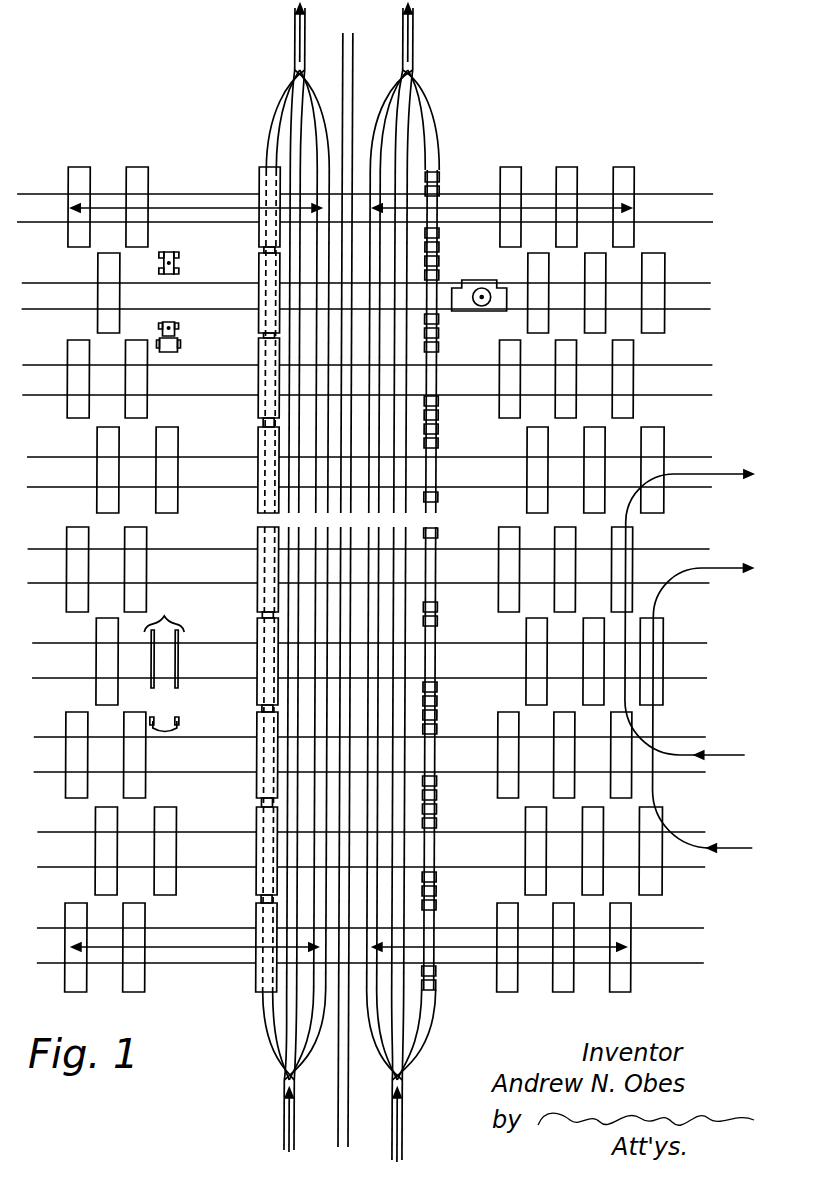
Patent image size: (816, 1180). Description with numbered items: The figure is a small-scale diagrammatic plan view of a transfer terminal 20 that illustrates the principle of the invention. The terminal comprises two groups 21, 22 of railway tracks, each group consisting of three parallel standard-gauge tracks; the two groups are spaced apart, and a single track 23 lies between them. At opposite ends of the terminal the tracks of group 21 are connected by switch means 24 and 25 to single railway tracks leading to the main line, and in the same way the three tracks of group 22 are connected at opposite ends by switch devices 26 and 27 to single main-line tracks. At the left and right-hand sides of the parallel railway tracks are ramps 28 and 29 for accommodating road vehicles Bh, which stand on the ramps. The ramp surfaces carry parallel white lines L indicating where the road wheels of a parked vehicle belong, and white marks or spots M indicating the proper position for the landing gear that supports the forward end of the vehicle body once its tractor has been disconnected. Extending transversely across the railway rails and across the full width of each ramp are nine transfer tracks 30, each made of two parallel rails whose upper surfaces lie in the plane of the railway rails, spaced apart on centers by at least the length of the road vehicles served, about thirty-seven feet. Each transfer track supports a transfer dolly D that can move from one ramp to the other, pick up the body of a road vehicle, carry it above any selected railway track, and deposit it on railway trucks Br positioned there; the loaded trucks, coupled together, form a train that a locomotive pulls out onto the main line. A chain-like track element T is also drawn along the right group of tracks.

The transfer terminal 20 is at (516, 66).
The group of tracks 21 is at (266, 108).
The group of tracks 22 is at (450, 130).
The single track 23 is at (366, 95).
The switch means 24 is at (288, 55).
The switch means 25 is at (280, 1092).
The switch device 26 is at (424, 60).
The switch device 27 is at (418, 1088).
The ramp 28 is at (178, 158).
The ramp 29 is at (635, 130).
The transfer tracks 30 is at (250, 228).
The road vehicles Bh is at (684, 268).
The railway trucks Br is at (246, 802).
The drive chain T is at (439, 238).
The transfer dolly D is at (487, 276).
The parallel white lines L is at (173, 598).
The white marks or spots M is at (186, 722).